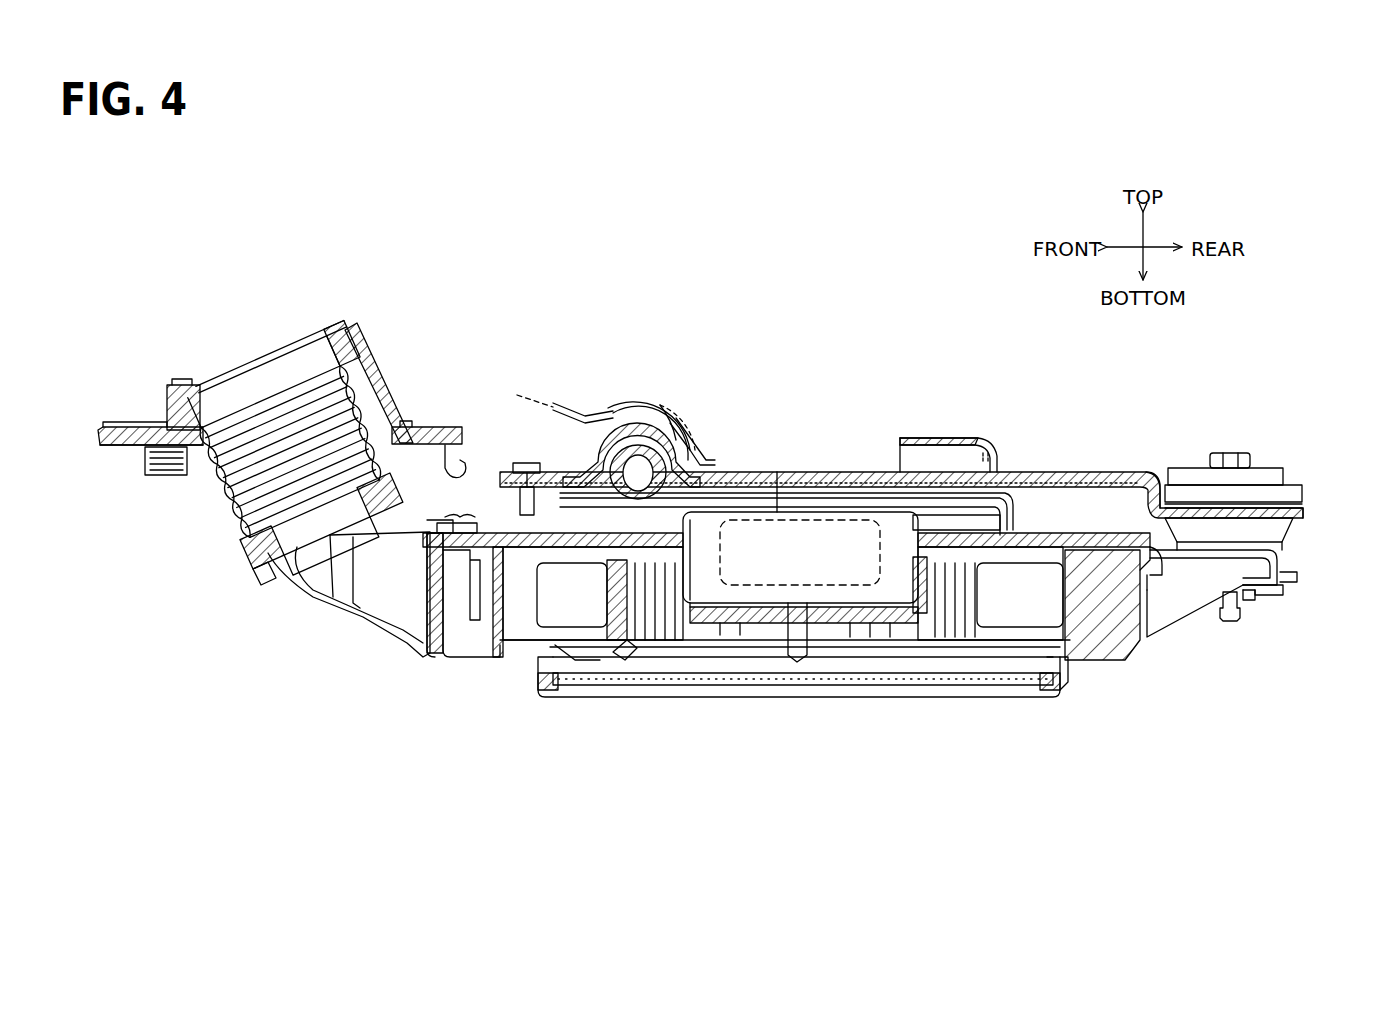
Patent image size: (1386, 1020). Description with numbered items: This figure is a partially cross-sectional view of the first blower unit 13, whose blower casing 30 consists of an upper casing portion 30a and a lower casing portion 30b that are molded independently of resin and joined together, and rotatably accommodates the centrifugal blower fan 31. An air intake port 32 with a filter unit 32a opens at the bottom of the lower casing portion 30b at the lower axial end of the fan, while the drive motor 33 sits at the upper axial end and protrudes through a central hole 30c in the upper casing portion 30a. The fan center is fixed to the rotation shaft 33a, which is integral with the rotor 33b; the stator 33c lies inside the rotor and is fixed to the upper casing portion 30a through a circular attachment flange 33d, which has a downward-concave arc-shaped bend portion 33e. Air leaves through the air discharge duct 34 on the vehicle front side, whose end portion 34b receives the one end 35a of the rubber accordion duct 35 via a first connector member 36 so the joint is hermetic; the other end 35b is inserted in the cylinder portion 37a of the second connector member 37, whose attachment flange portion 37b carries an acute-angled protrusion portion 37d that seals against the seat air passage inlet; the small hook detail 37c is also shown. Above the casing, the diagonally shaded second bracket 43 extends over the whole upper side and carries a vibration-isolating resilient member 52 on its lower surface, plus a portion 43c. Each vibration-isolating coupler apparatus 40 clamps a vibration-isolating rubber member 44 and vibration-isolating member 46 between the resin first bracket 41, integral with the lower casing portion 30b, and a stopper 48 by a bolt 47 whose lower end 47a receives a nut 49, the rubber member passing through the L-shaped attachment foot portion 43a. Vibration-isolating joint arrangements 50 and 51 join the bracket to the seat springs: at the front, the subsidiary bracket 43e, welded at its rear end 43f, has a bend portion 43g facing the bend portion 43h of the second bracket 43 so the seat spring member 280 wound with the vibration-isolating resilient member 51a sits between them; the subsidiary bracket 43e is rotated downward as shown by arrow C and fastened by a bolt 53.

The first blower unit 13 is at (1080, 662).
The blower casing 30 is at (563, 752).
The upper casing portion 30a is at (490, 640).
The lower casing portion 30b is at (530, 655).
The central hole 30c is at (883, 537).
The centrifugal blower fan 31 is at (940, 642).
The air intake port 32 is at (677, 652).
The filter unit 32a is at (730, 682).
The drive motor 33 is at (828, 533).
The rotation shaft 33a is at (800, 660).
The rotor 33b is at (703, 543).
The stator 33c is at (850, 520).
The attachment flange 33d is at (1017, 495).
The arc-shaped bend portion 33e is at (627, 645).
The air discharge duct 34 is at (357, 633).
The end portion 34b is at (262, 572).
The accordion duct 35 is at (226, 487).
The one end 35a is at (293, 572).
The other end 35b is at (318, 346).
The first connector member 36 is at (242, 548).
The second connector member 37 is at (392, 384).
The cylinder portion 37a is at (372, 377).
The attachment flange portion 37b is at (110, 448).
The hook 37c is at (163, 478).
The protrusion portion 37d is at (110, 426).
The vibration-isolating coupler apparatus 40 is at (1287, 565).
The first bracket 41 is at (1170, 560).
The second bracket 43 is at (1077, 468).
The attachment foot portion 43a is at (1305, 517).
The cover wall 43c is at (958, 440).
The subsidiary bracket 43e is at (580, 415).
The rear end 43f is at (777, 470).
The bend portion 43g is at (670, 425).
The bend portion 43h is at (690, 440).
The vibration-isolating rubber member 44 is at (1285, 542).
The vibration-isolating member 46 is at (1300, 487).
The bolt 47 is at (1223, 452).
The bolt end 47a is at (1228, 622).
The stopper 48 is at (1270, 466).
The nut 49 is at (1258, 600).
The vibration-isolating joint arrangement 50 is at (930, 433).
The vibration-isolating joint arrangement 51 is at (617, 392).
The vibration-isolating resilient member 51a is at (600, 420).
The vibration-isolating resilient member 52 is at (1130, 493).
The bolt 53 is at (530, 462).
The seat spring member 280 is at (650, 445).
The arrow C is at (502, 470).